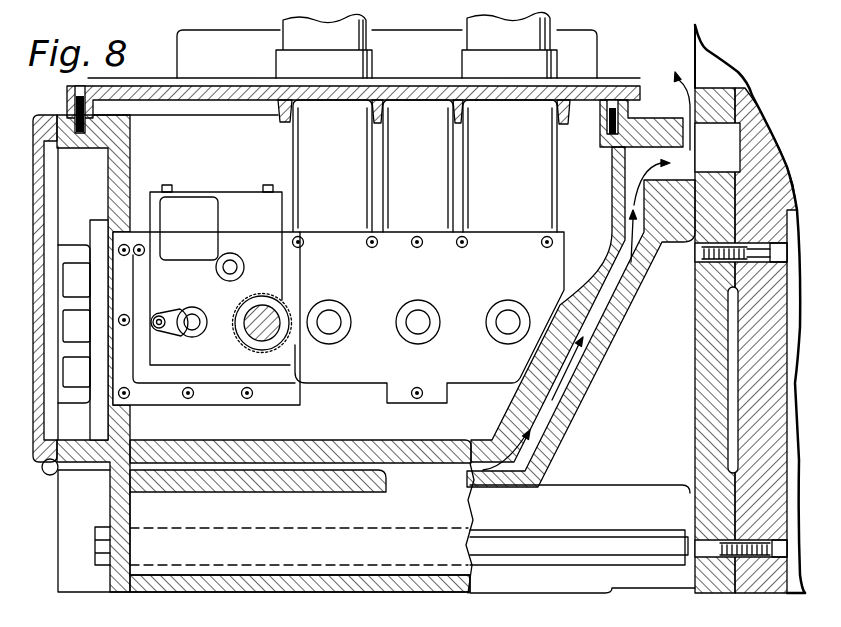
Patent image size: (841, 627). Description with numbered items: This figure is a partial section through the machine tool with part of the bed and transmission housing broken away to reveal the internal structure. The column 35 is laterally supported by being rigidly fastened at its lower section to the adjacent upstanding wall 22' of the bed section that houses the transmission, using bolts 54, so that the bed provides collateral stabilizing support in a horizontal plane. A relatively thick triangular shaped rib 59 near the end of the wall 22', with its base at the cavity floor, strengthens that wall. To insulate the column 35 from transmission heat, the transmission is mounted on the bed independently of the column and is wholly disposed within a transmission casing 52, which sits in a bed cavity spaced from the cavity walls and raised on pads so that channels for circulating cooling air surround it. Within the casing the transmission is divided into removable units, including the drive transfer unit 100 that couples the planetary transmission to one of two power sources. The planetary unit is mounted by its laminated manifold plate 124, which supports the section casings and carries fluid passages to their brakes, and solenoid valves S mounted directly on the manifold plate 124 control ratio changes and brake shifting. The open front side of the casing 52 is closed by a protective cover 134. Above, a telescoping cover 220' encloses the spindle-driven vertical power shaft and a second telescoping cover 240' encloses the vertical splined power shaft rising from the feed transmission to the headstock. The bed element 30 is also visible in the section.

The telescoping cover 240' is at (297, 46).
The telescoping cover 220' is at (479, 45).
The column 35 is at (694, 52).
The transmission casing 52 is at (656, 117).
The manifold plate 124 is at (82, 229).
The solenoid valves S is at (101, 279).
The drive transfer unit 100 is at (318, 390).
The triangular shaped rib 59 is at (569, 402).
The upstanding wall 22' is at (712, 340).
The protective cover 134 is at (54, 470).
The bolts 54 is at (93, 540).
The crankcase 30 is at (376, 533).